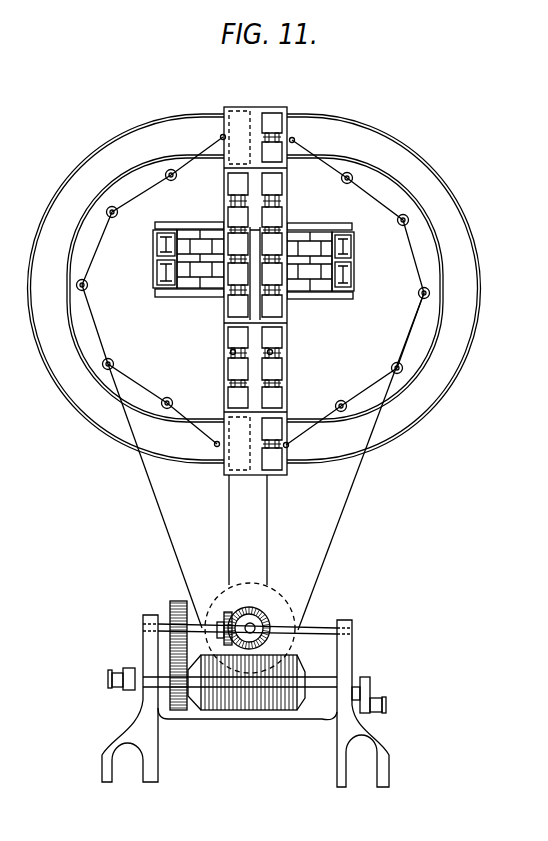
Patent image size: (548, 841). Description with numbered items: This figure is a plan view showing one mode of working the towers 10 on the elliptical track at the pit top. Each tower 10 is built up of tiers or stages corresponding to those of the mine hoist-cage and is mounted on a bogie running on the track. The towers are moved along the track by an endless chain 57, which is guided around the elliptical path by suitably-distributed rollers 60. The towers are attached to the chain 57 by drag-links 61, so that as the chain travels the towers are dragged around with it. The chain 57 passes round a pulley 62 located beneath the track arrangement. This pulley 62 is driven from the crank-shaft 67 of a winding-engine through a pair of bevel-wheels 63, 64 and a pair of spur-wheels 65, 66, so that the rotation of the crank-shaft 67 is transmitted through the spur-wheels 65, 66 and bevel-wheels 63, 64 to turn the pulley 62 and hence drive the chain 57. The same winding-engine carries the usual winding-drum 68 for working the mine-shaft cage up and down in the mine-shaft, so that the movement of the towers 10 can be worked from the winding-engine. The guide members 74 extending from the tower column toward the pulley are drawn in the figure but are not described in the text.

The tower 10 is at (288, 112).
The chain 57 is at (153, 506).
The rollers 60 is at (86, 290).
The drag-links 61 is at (196, 156).
The pulley 62 is at (268, 600).
The bevel-wheel 63 is at (262, 620).
The bevel-wheel 64 is at (226, 612).
The spur-wheel 65 is at (170, 606).
The spur-wheel 66 is at (170, 664).
The crank-shaft 67 is at (308, 684).
The winding-drum 68 is at (250, 705).
The guide rods 74 is at (229, 525).